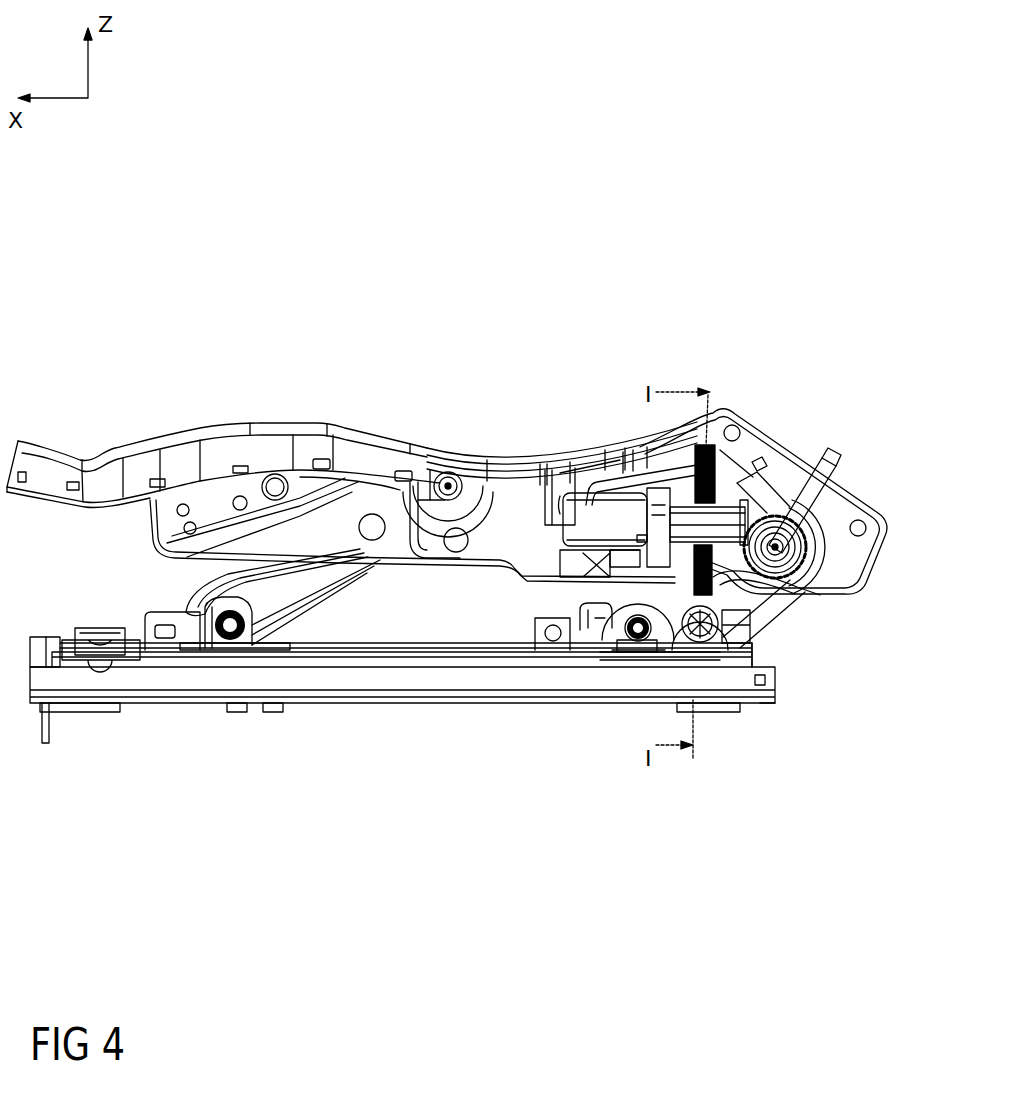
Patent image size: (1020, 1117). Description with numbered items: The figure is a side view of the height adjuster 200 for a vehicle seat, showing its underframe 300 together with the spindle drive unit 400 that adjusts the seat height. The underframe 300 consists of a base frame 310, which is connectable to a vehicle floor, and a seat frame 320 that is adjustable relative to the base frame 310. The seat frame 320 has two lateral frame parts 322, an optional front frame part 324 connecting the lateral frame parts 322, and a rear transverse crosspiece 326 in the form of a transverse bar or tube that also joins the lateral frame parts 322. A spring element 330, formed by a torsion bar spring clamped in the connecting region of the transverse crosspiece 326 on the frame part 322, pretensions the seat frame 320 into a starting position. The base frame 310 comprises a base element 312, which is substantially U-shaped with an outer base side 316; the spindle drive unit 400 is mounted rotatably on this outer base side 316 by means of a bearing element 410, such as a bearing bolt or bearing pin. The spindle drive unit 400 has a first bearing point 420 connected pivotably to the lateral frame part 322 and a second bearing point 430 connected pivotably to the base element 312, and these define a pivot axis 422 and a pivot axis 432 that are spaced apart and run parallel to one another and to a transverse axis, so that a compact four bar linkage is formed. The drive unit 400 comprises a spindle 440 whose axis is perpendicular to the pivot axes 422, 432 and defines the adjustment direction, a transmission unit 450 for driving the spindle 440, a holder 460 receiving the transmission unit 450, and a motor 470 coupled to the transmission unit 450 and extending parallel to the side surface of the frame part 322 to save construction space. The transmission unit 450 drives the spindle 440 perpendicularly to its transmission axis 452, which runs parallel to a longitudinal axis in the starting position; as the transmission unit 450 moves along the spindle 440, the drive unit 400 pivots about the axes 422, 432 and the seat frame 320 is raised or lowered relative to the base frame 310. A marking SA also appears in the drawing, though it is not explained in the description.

The underframe 300 is at (428, 307).
The seat frame 320 is at (243, 396).
The front frame part 324 is at (359, 455).
The height adjuster 200 is at (548, 420).
The motor 470 is at (579, 524).
The pivot axis 422 is at (588, 446).
The lateral frame part 322 is at (618, 477).
The transmission unit 450 is at (663, 483).
The spindle 440 is at (708, 390).
The first bearing point 420 is at (730, 483).
The rear transverse crosspiece 326 is at (792, 500).
The spring element 330 is at (824, 464).
The base frame 310 is at (183, 590).
The spindle drive unit 400 is at (521, 600).
The transmission axis 452 is at (793, 583).
The holder 460 is at (760, 600).
The outer base side 316 is at (755, 650).
The seat axis SA is at (760, 703).
The pivot axis 432 is at (632, 632).
The base element 312 is at (633, 650).
The second bearing point 430 is at (688, 658).
The bearing element 410 is at (695, 660).